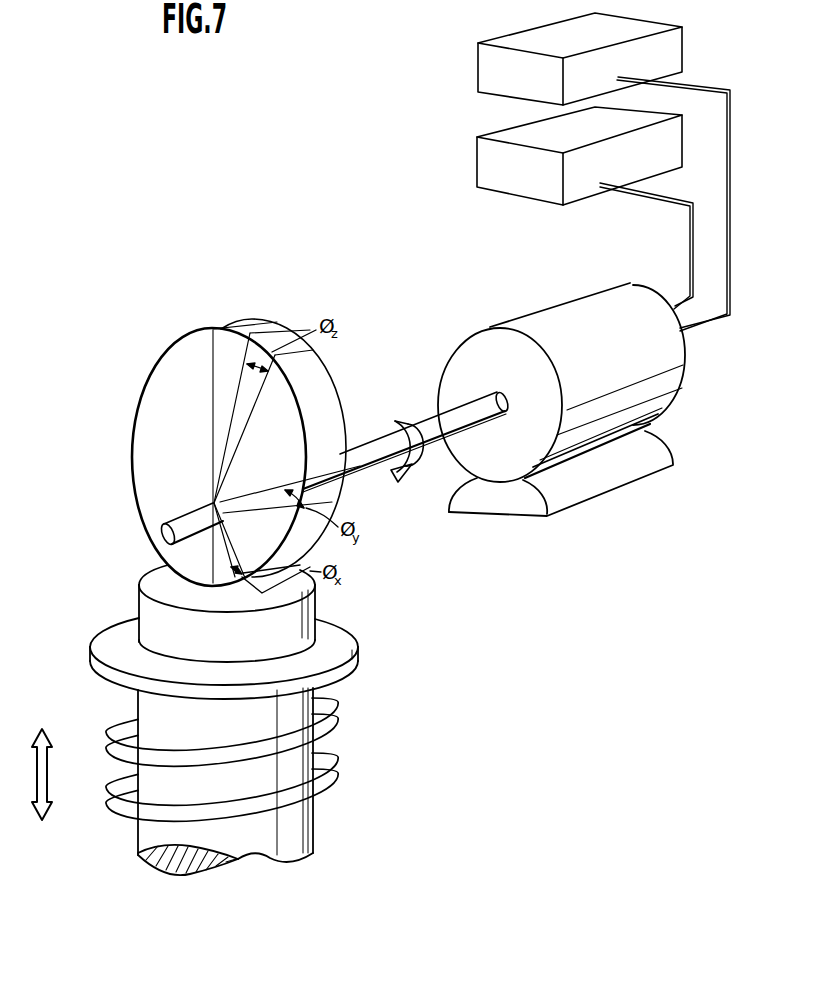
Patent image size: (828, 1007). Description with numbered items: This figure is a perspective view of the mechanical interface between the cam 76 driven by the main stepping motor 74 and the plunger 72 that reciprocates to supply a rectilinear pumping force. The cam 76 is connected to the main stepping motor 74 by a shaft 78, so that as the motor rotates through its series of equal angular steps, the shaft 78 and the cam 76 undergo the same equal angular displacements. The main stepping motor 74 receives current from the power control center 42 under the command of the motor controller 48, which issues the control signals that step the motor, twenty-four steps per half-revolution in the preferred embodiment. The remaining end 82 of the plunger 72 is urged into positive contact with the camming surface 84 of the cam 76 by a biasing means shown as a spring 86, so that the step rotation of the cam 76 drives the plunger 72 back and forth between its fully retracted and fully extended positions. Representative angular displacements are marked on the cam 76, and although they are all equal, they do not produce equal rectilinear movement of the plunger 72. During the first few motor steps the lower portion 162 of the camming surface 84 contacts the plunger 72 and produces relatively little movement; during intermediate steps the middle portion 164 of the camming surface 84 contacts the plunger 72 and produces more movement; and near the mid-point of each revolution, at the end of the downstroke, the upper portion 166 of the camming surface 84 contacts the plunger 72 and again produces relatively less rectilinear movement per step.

The power control center 42 is at (482, 80).
The motor controller 48 is at (490, 182).
The plunger 72 is at (313, 818).
The main stepping motor 74 is at (605, 472).
The cam 76 is at (142, 425).
The shaft 78 is at (380, 462).
The remaining end of plunger 82 is at (148, 578).
The camming surface 84 is at (327, 407).
The spring 86 is at (338, 717).
The lower portion of camming surface 162 is at (310, 548).
The middle portion of camming surface 164 is at (318, 443).
The upper portion of camming surface 166 is at (268, 323).